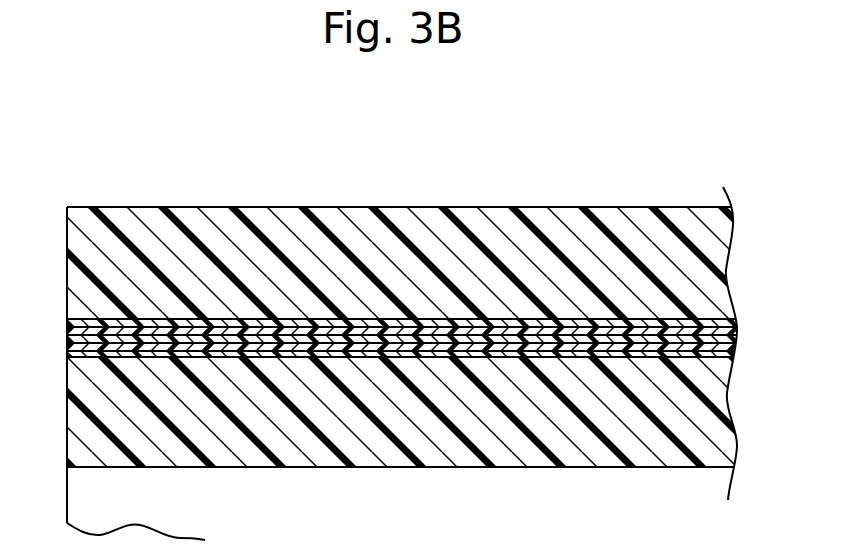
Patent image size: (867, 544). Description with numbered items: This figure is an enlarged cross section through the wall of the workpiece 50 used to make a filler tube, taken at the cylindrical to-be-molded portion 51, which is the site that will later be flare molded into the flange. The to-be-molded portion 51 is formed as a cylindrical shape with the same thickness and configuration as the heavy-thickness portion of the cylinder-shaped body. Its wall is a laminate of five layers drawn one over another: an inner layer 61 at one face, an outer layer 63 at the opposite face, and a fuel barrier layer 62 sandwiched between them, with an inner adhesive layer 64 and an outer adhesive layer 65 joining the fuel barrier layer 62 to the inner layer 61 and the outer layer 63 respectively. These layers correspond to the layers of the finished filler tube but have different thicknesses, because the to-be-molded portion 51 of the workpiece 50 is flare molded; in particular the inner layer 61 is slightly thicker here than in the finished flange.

The workpiece 50 is at (688, 178).
The to-be-molded portion 51 is at (424, 207).
The inner layer 61 is at (128, 382).
The fuel barrier layer 62 is at (235, 340).
The outer layer 63 is at (320, 257).
The inner adhesive layer 64 is at (183, 351).
The outer adhesive layer 65 is at (287, 328).